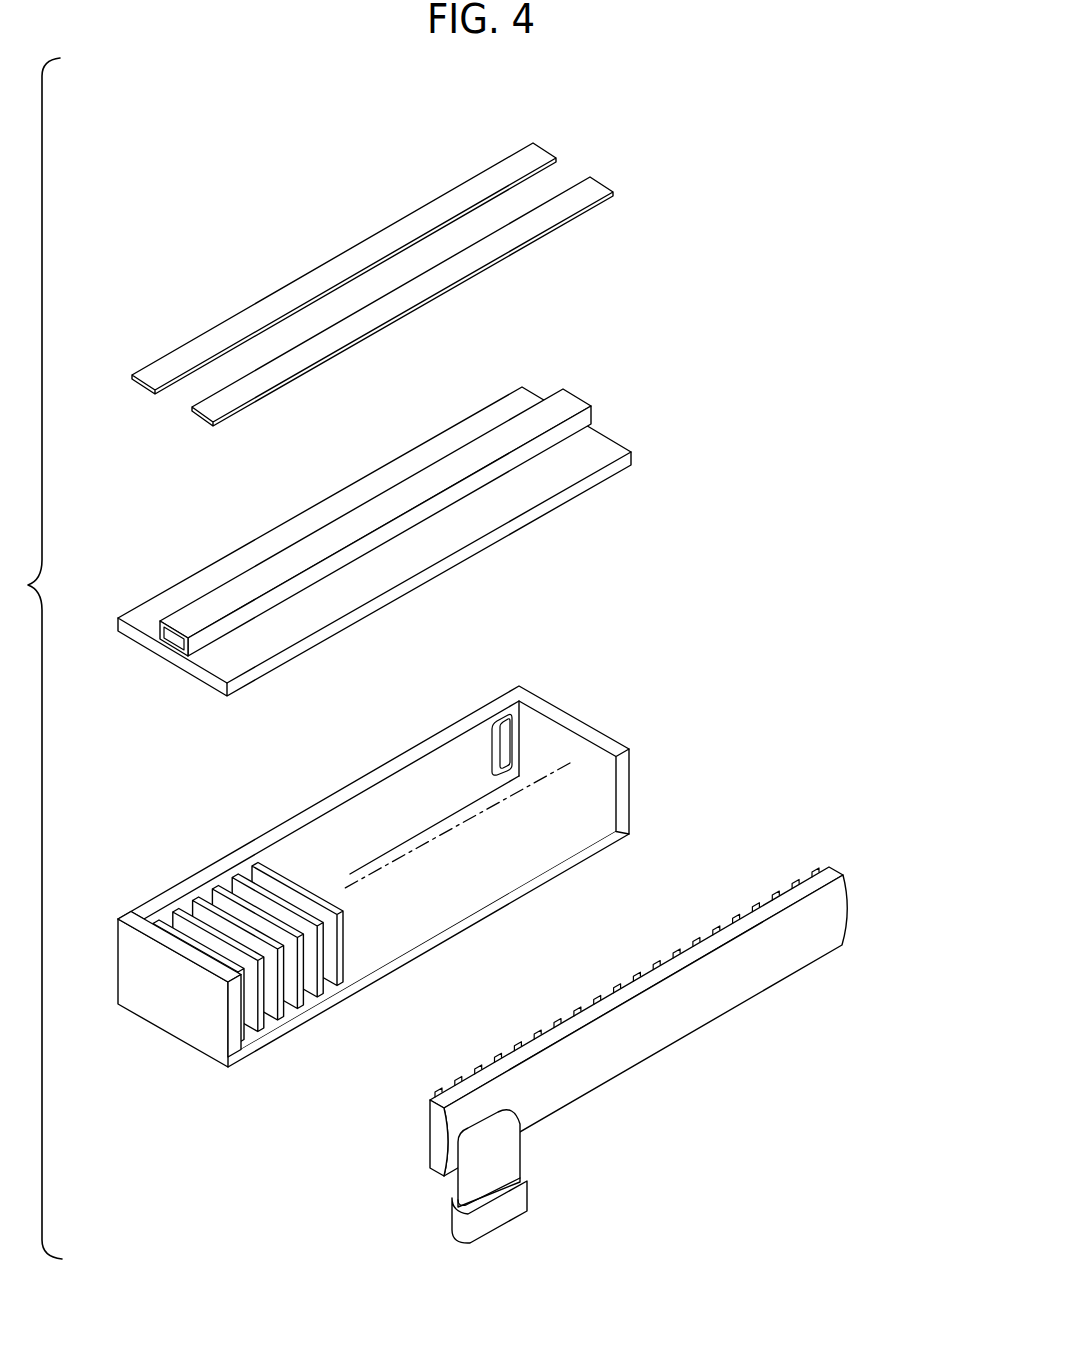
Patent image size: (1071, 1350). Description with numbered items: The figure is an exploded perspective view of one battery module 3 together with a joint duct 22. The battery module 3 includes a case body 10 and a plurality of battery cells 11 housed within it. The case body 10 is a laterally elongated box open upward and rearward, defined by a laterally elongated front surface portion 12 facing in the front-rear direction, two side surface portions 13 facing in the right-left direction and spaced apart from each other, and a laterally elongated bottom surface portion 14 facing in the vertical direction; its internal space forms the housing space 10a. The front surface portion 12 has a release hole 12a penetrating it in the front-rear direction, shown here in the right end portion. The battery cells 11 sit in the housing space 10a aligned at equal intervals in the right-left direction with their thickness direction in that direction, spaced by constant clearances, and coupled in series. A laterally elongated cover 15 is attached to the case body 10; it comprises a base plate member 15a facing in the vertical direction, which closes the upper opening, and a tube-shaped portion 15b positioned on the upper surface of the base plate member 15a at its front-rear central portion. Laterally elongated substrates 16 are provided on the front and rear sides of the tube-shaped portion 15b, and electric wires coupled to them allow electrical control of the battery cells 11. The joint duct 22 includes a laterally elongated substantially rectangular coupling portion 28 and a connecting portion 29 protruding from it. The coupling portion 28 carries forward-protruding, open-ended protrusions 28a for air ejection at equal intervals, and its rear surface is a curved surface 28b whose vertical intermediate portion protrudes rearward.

The battery module 3 is at (796, 190).
The case body 10 is at (401, 855).
The housing space 10a is at (602, 765).
The battery cells 11 is at (290, 840).
The front surface portion 12 is at (373, 796).
The release hole 12a is at (492, 748).
The side surface portions 13 is at (627, 793).
The bottom surface portion 14 is at (430, 920).
The cover 15 is at (374, 512).
The base plate member 15a is at (295, 527).
The tube-shaped portion 15b is at (425, 480).
The substrates 16 is at (383, 237).
The joint duct 22 is at (657, 1014).
The coupling portion 28 is at (657, 980).
The protrusions for air ejection 28a is at (455, 1080).
The curved surface 28b is at (789, 963).
The connecting portion 29 is at (513, 1153).